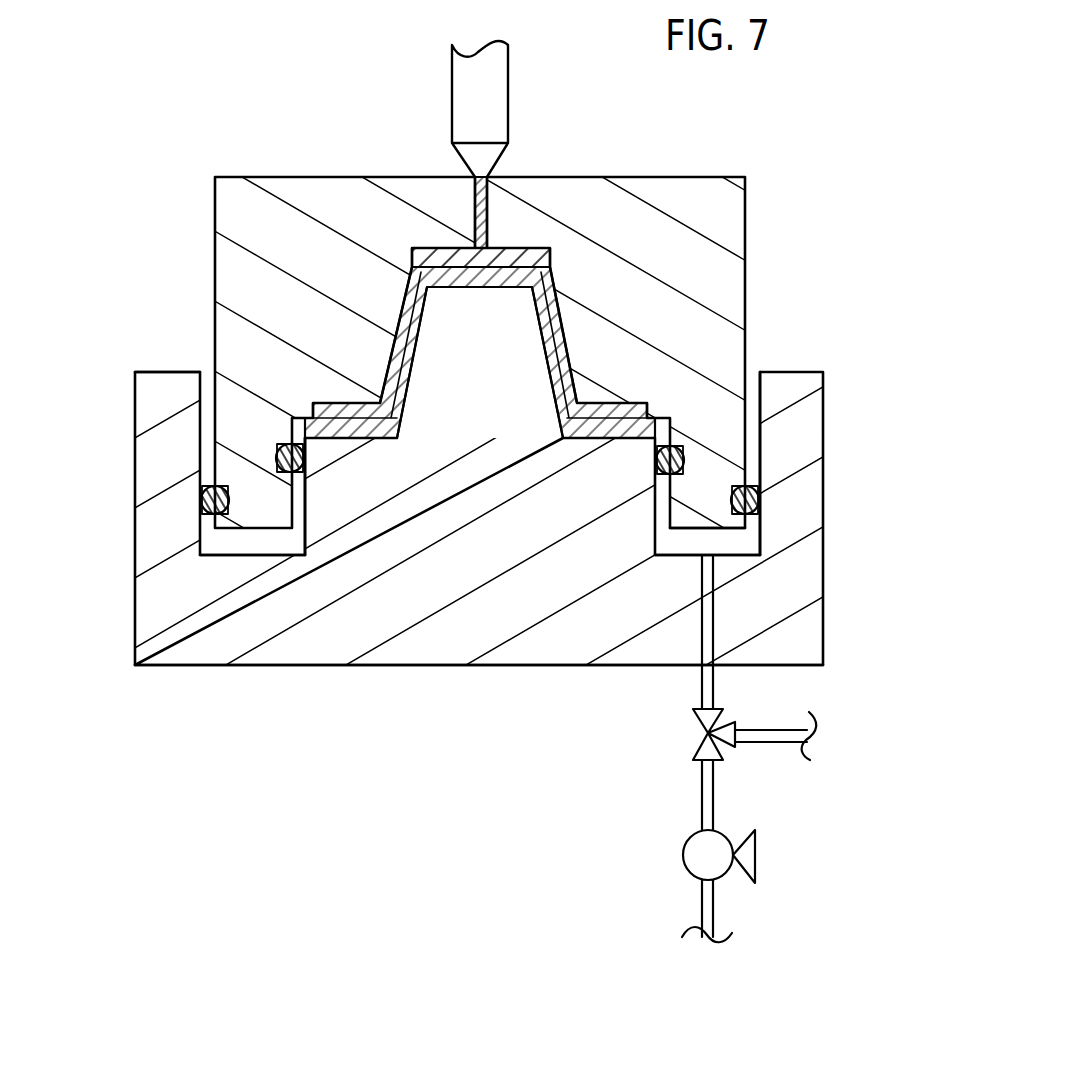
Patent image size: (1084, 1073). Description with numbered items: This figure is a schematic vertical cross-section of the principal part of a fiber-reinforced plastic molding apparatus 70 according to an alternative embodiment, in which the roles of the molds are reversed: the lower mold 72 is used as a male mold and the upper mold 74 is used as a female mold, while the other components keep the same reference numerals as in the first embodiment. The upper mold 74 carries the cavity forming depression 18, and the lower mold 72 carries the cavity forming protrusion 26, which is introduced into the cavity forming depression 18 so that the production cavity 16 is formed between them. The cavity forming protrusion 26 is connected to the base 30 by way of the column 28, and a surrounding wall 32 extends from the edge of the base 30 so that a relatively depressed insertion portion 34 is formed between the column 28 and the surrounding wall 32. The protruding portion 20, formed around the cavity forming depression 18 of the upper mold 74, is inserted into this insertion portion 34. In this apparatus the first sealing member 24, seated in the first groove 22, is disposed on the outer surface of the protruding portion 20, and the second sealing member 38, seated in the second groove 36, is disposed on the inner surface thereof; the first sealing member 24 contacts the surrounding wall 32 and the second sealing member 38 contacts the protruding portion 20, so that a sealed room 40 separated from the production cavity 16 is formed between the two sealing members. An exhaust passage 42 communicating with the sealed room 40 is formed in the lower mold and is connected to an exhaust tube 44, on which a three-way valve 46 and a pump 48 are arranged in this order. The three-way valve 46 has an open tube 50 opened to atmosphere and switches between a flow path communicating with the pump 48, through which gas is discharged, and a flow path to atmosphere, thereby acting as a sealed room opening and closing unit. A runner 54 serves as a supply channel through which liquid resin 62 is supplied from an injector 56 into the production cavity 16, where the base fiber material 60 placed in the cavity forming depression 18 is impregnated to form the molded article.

The production cavity 16 is at (408, 352).
The cavity forming depression 18 is at (522, 272).
The protruding portion 20 is at (682, 515).
The first groove 22 is at (757, 510).
The first sealing member 24 is at (757, 497).
The cavity forming protrusion 26 is at (445, 310).
The column 28 is at (320, 503).
The base 30 is at (283, 653).
The surrounding wall 32 is at (143, 415).
The insertion portion 34 is at (247, 550).
The second groove 36 is at (303, 465).
The second sealing member 38 is at (303, 452).
The sealed room 40 is at (753, 542).
The exhaust passage 42 is at (706, 632).
The exhaust tube 44 is at (702, 802).
The three-way valve 46 is at (705, 748).
The pump 48 is at (692, 853).
The open tube 50 is at (763, 742).
The runner 54 is at (467, 212).
The injector 56 is at (500, 82).
The base fiber material 60 is at (628, 433).
The liquid resin 62 is at (530, 254).
The molding apparatus 70 is at (773, 109).
The lower mold 72 is at (134, 633).
The upper mold 74 is at (283, 175).